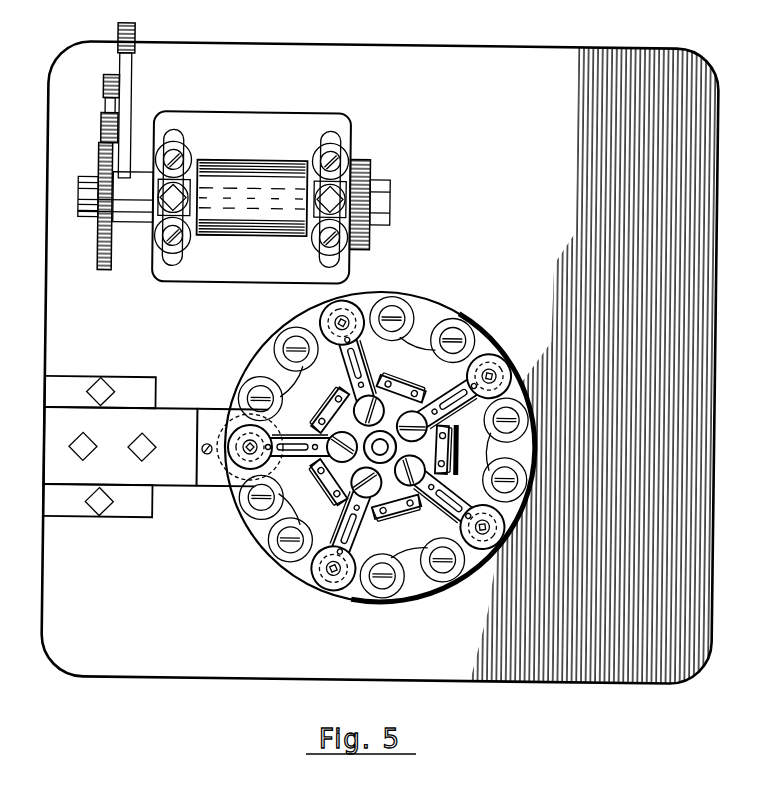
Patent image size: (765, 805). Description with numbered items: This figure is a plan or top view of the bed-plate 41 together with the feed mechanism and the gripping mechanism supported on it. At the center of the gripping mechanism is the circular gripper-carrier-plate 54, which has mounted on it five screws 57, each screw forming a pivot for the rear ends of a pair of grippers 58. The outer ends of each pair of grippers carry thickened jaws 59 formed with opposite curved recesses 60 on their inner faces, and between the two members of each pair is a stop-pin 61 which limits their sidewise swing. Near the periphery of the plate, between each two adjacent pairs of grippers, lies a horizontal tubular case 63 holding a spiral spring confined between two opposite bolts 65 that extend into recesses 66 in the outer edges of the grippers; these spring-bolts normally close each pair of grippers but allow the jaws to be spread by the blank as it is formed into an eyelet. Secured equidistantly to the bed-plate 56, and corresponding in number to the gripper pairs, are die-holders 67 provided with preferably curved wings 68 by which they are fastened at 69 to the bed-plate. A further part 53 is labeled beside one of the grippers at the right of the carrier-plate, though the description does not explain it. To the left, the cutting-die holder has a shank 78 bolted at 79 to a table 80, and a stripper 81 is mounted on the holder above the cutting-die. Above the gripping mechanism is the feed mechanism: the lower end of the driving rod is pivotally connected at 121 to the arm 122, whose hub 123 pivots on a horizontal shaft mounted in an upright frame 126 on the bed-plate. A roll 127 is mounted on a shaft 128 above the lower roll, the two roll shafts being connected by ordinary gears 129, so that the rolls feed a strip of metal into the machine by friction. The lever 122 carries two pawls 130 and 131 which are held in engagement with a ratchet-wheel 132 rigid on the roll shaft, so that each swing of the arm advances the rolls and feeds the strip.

The bed-plate 41 is at (215, 682).
The stop bar 53 is at (454, 441).
The gripper-carrier-plate 54 is at (322, 400).
The bed-plate 56 is at (458, 320).
The screws 57 is at (355, 412).
The grippers 58 is at (371, 446).
The thickened jaws 59 is at (357, 310).
The curved recesses 60 is at (489, 365).
The stop-pin 61 is at (428, 398).
The horizontal tubular case 63 is at (400, 380).
The bolts 65 is at (317, 487).
The recesses 66 is at (463, 491).
The die-holders 67 is at (397, 307).
The wings 68 is at (425, 310).
The securing points 69 is at (405, 307).
The shank 78 is at (178, 490).
The bolt 79 is at (92, 448).
The table 80 is at (141, 521).
The stripper 81 is at (203, 491).
The pivotal connection 121 is at (131, 41).
The arm 122 is at (129, 100).
The hub 123 is at (138, 226).
The upright frame 126 is at (236, 116).
The roll 127 is at (254, 168).
The shaft 128 is at (389, 186).
The gears 129 is at (378, 238).
The pawl 130 is at (98, 110).
The pawl 131 is at (96, 153).
The ratchet-wheel 132 is at (94, 249).